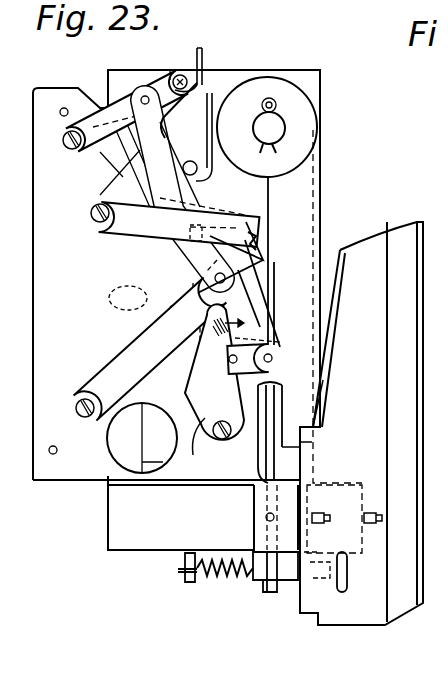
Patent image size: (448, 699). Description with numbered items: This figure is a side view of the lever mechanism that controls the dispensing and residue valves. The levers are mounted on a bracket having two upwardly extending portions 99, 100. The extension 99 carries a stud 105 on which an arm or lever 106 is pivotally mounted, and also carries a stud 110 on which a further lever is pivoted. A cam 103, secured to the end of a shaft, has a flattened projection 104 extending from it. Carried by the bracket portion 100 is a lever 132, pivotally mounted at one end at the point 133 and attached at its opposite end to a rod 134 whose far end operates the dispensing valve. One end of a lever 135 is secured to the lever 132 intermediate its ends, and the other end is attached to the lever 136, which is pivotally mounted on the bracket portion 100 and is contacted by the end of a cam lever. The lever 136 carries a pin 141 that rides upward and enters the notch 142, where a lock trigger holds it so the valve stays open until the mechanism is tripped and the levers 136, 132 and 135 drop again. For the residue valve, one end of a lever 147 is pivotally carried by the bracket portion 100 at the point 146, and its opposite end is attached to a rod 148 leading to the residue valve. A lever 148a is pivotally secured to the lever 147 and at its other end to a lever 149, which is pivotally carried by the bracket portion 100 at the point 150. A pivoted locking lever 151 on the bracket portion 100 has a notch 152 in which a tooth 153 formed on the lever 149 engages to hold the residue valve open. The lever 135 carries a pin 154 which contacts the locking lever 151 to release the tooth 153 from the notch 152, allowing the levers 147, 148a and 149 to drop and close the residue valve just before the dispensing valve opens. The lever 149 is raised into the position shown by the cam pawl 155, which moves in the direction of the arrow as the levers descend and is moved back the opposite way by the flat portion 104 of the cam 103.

The upwardly extending portion 99 is at (318, 70).
The upwardly extending portion 100 is at (48, 100).
The cam 103 is at (235, 475).
The flattened projection 104 is at (300, 442).
The stud 105 is at (284, 131).
The arm or lever 106 is at (302, 106).
The stud 110 is at (176, 78).
The lever 132 is at (179, 150).
The pivot point 133 is at (66, 107).
The rod 134 is at (232, 72).
The lever 135 is at (262, 338).
The lever 136 is at (272, 352).
The pin 141 is at (193, 353).
The notch 142 is at (192, 305).
The pivot point 146 is at (64, 146).
The lever 147 is at (110, 140).
The rod 148 is at (205, 53).
The lever 148a is at (180, 217).
The lever 149 is at (103, 366).
The pivot point 150 is at (74, 406).
The locking lever 151 is at (87, 230).
The notch 152 is at (263, 215).
The tooth 153 is at (258, 252).
The pin 154 is at (200, 240).
The cam pawl 155 is at (198, 433).